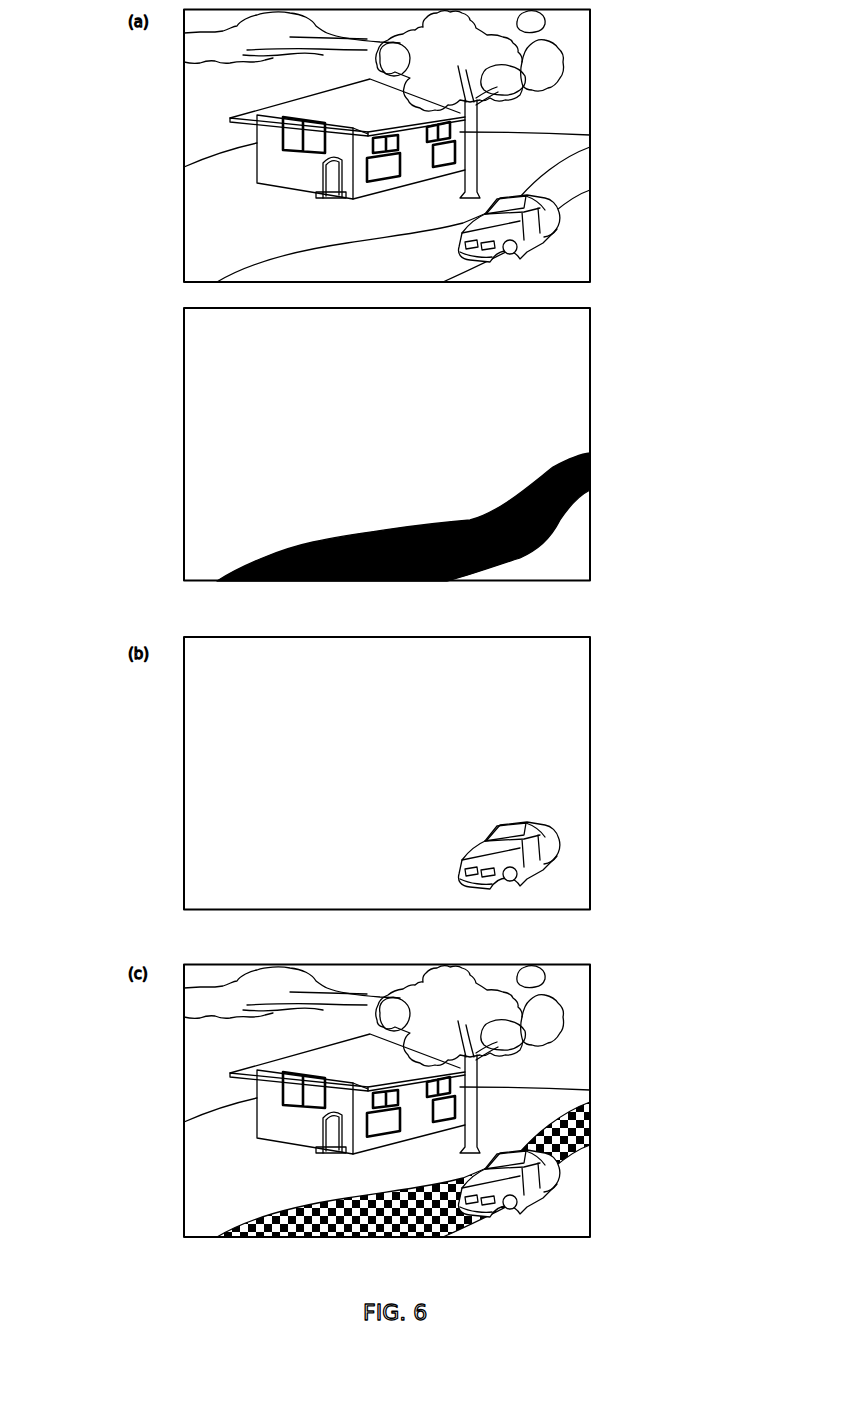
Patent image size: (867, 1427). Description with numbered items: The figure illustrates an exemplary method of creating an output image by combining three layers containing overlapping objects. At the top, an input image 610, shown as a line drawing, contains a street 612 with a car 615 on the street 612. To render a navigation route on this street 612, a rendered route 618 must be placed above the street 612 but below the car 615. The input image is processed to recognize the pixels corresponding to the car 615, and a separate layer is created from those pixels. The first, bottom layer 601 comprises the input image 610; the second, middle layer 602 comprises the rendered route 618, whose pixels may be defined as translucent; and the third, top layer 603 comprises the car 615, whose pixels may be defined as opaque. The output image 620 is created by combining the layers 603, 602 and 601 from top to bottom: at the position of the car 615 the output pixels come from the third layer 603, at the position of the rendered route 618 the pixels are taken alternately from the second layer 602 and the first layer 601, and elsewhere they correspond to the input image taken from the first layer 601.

The first layer 601 is at (163, 201).
The second layer 602 is at (163, 443).
The third layer 603 is at (163, 737).
The input image 610 is at (163, 108).
The street 612 is at (573, 179).
The car 615 is at (557, 215).
The rendered route 618 is at (573, 477).
The output image 620 is at (163, 1034).